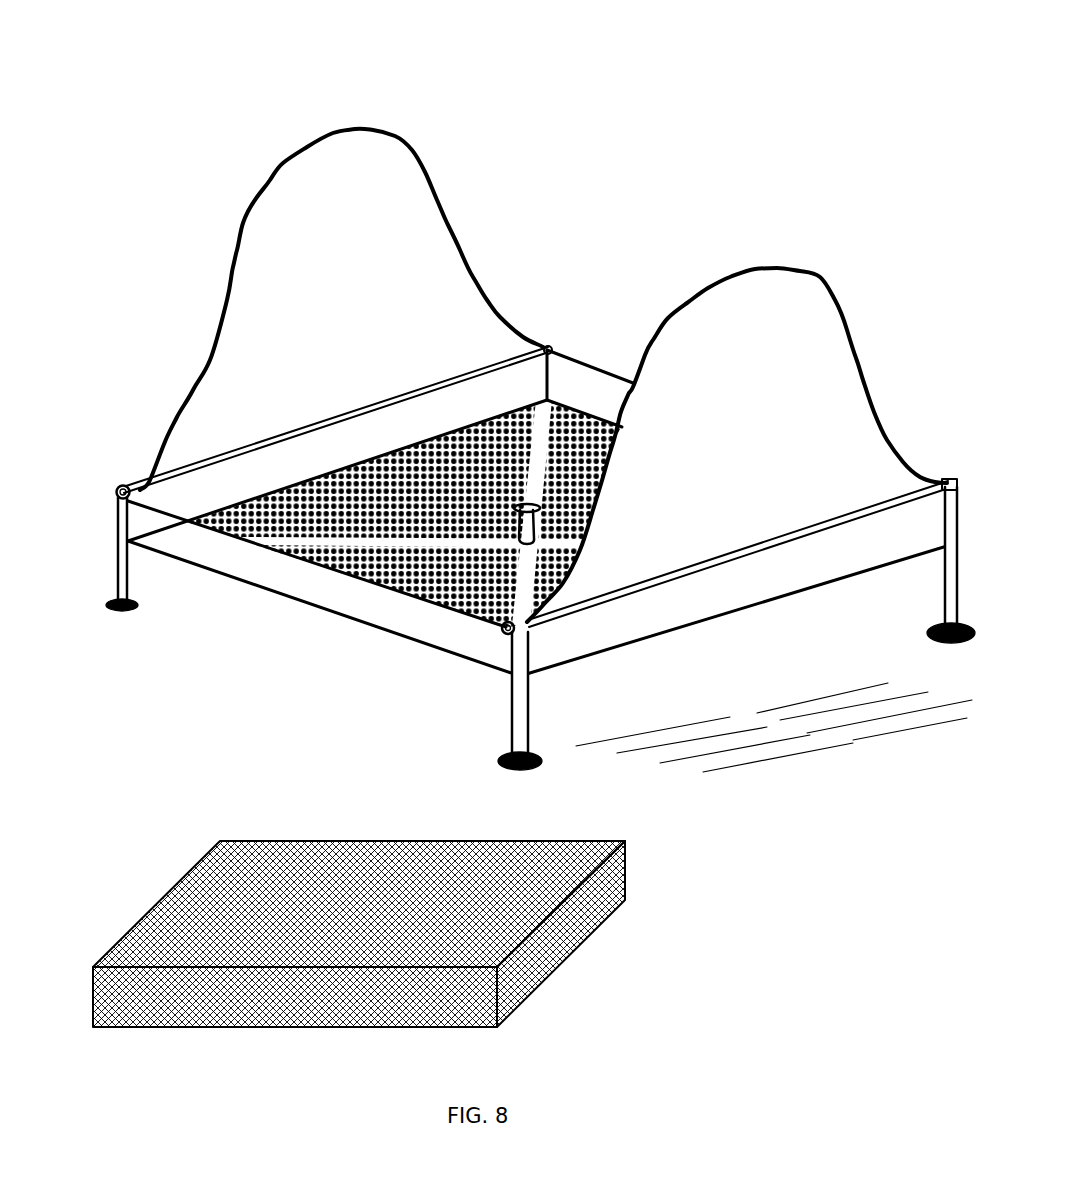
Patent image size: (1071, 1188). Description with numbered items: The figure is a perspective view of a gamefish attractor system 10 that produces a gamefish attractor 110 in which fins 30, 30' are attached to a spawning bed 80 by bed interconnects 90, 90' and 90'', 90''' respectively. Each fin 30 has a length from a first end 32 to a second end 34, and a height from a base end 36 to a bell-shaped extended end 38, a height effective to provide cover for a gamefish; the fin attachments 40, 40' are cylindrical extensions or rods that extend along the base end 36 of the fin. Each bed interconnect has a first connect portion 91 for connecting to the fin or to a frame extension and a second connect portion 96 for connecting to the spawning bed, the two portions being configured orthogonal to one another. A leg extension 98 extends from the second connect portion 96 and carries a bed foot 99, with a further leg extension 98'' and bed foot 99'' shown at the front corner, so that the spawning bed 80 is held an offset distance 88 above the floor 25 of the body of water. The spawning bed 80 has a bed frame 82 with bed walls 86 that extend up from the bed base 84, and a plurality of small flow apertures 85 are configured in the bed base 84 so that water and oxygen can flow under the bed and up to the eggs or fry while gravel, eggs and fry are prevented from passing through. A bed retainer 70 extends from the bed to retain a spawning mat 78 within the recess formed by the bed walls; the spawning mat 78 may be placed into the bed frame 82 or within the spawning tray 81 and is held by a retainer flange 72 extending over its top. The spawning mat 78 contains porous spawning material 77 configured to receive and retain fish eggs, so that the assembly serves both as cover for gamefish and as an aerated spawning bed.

The gamefish attractor system 10 is at (217, 117).
The gamefish attractor 110 is at (302, 149).
The floor 25 is at (822, 728).
The fin 30 is at (341, 309).
The fin 30' is at (737, 407).
The first end 32 is at (115, 492).
The second end 34 is at (544, 348).
The base end 36 is at (364, 408).
The extended end 38 is at (378, 124).
The fin attachment 40 is at (151, 441).
The fin attachment 40' is at (701, 465).
The bed retainer 70 is at (548, 524).
The retainer flange 72 is at (546, 490).
The spawning material 77 is at (560, 920).
The spawning mat 78 is at (625, 878).
The spawning bed 80 is at (593, 398).
The spawning tray 81 is at (286, 582).
The bed frame 82 is at (338, 578).
The bed base 84 is at (352, 580).
The flow apertures 85 is at (606, 424).
The bed walls 86 is at (603, 392).
The offset distance 88 is at (750, 606).
The bed interconnect 90 is at (107, 463).
The bed interconnect 90' is at (559, 303).
The bed interconnect 90'' is at (570, 655).
The bed interconnect 90''' is at (923, 561).
The first connect portion 91 is at (136, 487).
The second connect portion 96 is at (122, 546).
The leg extension 98 is at (94, 549).
The leg extension 98'' is at (556, 695).
The bed foot 99 is at (154, 619).
The bed foot 99'' is at (559, 772).